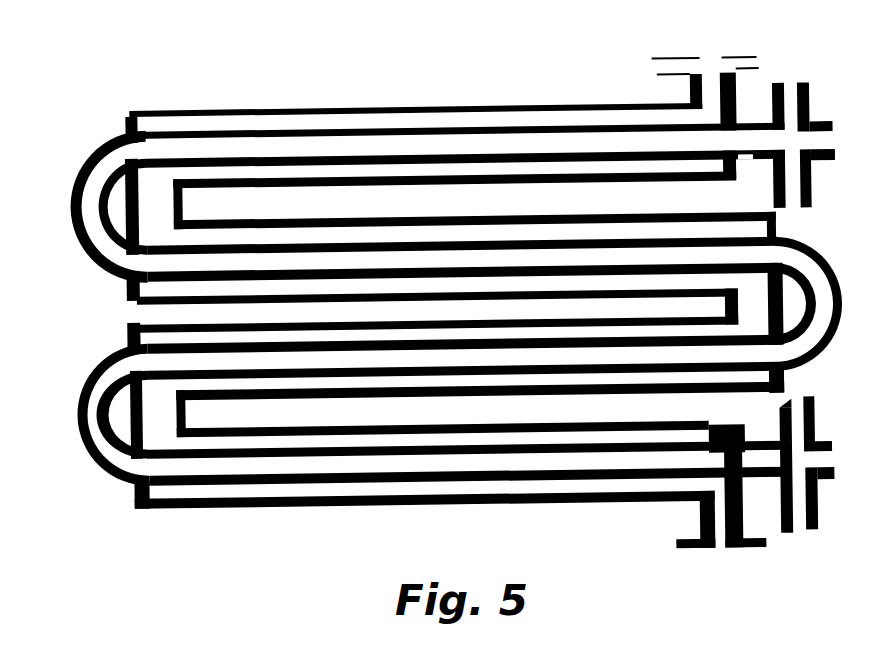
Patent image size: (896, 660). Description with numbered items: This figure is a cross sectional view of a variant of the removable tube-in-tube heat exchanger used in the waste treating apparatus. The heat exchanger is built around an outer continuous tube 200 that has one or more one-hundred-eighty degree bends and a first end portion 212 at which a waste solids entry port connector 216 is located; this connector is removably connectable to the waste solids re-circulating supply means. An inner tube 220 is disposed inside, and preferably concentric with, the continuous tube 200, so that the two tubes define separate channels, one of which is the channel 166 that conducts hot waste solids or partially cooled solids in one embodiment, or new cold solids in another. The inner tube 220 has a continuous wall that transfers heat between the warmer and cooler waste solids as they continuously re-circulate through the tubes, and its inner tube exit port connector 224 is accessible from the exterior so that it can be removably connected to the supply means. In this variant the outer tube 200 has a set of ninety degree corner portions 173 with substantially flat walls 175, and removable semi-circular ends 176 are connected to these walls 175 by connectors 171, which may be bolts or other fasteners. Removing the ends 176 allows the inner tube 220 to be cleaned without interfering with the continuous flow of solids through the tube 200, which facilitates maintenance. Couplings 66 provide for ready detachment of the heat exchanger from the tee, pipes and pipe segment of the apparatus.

The continuous tube 200 is at (457, 306).
The 90 degree corner portions 173 is at (437, 421).
The connectors 171 is at (136, 313).
The substantially flat walls 175 is at (443, 346).
The removable semi-circular ends 176 is at (457, 304).
The inner tube 220 is at (479, 315).
The first end portion 212 is at (740, 99).
The channel 166 is at (729, 164).
The inner tube exit port connector 224 is at (785, 420).
The waste solids entry port connector 216 is at (745, 494).
The couplings 66 is at (746, 293).